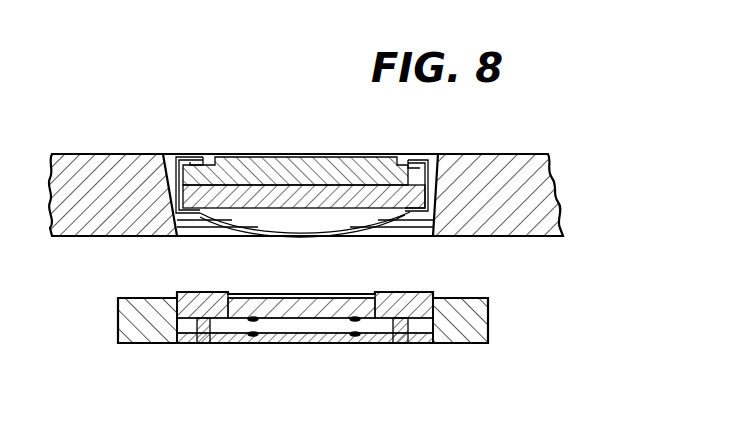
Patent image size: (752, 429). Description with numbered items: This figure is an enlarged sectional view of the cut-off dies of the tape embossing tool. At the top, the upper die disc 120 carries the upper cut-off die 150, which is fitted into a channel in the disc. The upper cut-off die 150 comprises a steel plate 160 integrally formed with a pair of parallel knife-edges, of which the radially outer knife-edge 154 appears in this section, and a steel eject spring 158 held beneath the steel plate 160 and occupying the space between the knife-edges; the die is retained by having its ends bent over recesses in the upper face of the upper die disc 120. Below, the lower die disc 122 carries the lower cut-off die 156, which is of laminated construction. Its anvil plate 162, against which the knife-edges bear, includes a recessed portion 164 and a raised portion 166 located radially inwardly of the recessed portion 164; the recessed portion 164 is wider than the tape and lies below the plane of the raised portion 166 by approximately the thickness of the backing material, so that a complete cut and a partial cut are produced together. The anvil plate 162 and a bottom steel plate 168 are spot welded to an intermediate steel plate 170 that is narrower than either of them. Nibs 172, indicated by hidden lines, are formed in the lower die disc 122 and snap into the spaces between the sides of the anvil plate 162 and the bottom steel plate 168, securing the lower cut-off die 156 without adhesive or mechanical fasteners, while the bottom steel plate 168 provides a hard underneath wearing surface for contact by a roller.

The upper die disc 120 is at (527, 187).
The lower die disc 122 is at (490, 316).
The upper cut-off die 150 is at (313, 151).
The radially outer knife-edge 154 is at (408, 222).
The lower cut-off die 156 is at (406, 290).
The eject spring 158 is at (292, 234).
The steel plate 160 is at (230, 192).
The anvil plate 162 is at (190, 294).
The recessed portion 164 is at (316, 296).
The raised portion 166 is at (256, 295).
The bottom steel plate 168 is at (355, 342).
The intermediate steel plate 170 is at (288, 334).
The nibs 172 is at (203, 333).